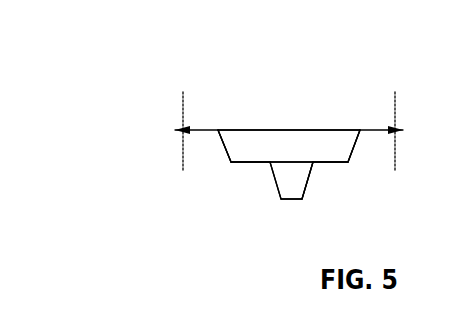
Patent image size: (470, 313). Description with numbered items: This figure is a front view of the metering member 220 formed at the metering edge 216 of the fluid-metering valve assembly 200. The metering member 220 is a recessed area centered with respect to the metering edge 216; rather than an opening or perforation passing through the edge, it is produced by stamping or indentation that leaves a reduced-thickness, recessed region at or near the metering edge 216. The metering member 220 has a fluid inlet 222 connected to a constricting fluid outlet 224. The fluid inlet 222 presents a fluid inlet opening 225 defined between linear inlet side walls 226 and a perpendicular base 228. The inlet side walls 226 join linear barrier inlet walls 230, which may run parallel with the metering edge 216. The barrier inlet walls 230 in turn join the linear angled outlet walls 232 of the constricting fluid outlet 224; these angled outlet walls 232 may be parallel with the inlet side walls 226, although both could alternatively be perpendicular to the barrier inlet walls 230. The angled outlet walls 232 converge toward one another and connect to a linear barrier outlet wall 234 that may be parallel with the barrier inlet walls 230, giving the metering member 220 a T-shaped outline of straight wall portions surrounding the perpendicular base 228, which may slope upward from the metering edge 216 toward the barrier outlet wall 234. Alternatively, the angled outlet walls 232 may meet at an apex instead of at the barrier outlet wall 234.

The fluid-metering valve assembly 200 is at (164, 76).
The metering edge 216 is at (358, 148).
The metering member 220 is at (335, 145).
The fluid inlet 222 is at (250, 137).
The constricting fluid outlet 224 is at (304, 190).
The fluid inlet opening 225 is at (288, 133).
The inlet side walls 226 is at (226, 146).
The perpendicular base 228 is at (308, 145).
The barrier inlet walls 230 is at (251, 166).
The angled outlet walls 232 is at (306, 186).
The barrier outlet wall 234 is at (291, 202).